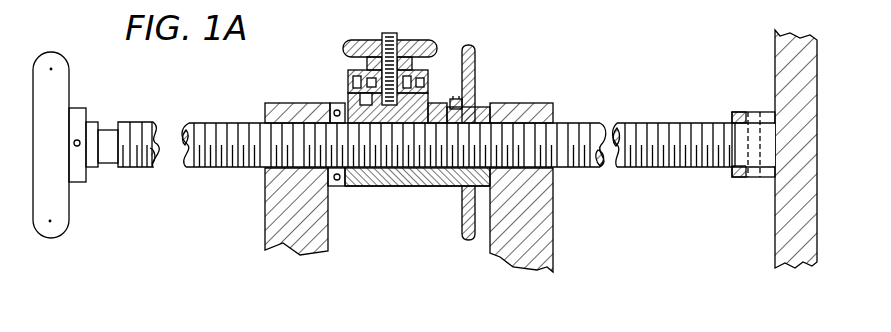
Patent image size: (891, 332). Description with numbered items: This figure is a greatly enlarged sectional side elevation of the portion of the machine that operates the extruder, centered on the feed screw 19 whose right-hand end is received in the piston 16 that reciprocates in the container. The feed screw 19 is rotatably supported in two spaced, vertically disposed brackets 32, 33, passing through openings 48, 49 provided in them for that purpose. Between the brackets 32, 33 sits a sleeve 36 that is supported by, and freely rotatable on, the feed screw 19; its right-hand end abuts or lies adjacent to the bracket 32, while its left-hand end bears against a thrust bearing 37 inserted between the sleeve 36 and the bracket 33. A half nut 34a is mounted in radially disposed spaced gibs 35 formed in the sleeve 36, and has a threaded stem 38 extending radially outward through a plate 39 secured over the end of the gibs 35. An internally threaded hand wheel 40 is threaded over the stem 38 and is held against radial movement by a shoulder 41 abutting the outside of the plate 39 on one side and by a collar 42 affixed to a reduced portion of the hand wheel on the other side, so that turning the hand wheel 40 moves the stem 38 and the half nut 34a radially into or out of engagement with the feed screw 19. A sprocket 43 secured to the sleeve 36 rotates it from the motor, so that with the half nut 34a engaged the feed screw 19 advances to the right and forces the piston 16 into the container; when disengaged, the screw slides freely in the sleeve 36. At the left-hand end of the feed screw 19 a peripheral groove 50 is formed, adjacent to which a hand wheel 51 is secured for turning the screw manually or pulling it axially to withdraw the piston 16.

The piston 16 is at (808, 97).
The feed screw 19 is at (583, 124).
The bracket 32 is at (528, 104).
The bracket 33 is at (271, 104).
The half nut 34a is at (400, 187).
The gibs 35 is at (350, 95).
The sleeve 36 is at (362, 187).
The thrust bearing 37 is at (335, 187).
The threaded stem 38 is at (392, 36).
The plate 39 is at (407, 63).
The hand wheel 40 is at (363, 42).
The shoulder 41 is at (355, 73).
The collar 42 is at (349, 90).
The sprocket 43 is at (469, 243).
The opening 48 is at (537, 164).
The opening 49 is at (287, 165).
The peripheral groove 50 is at (106, 129).
The hand wheel 51 is at (45, 52).